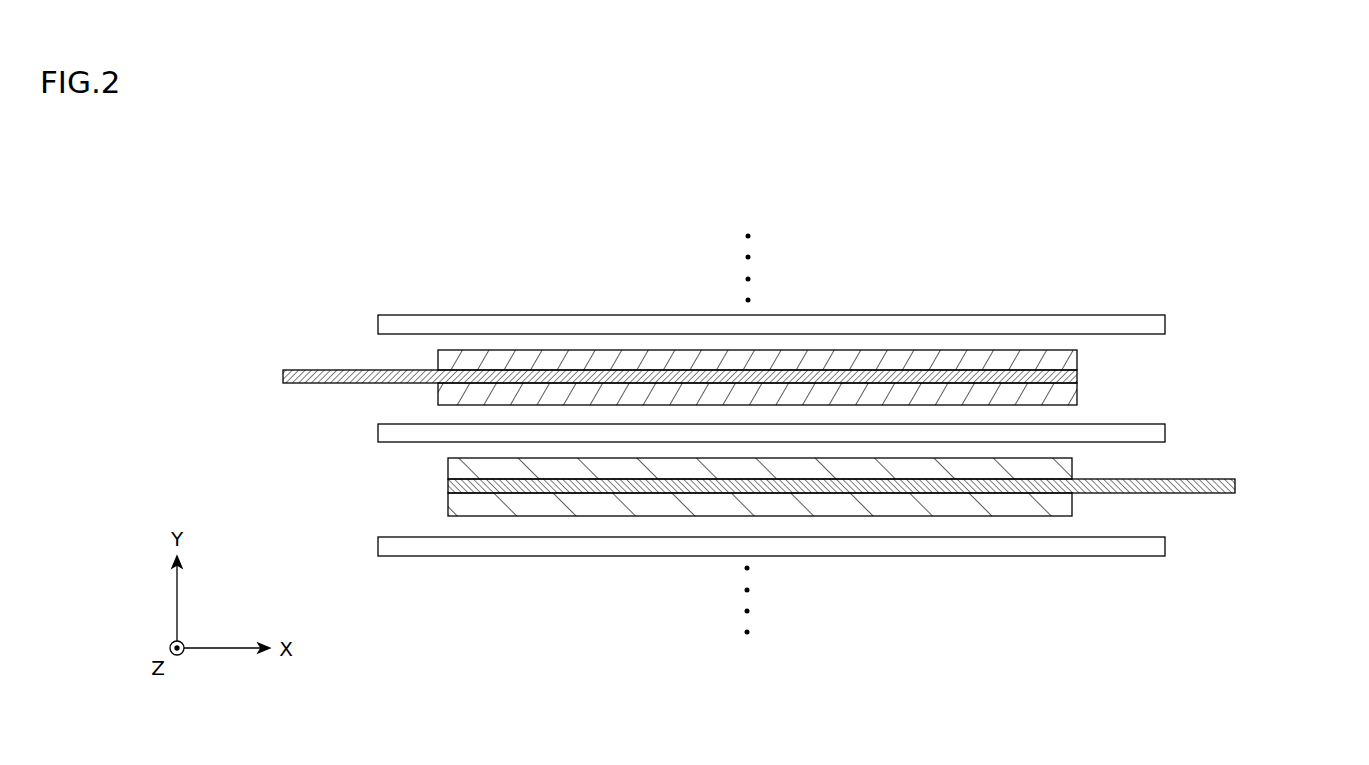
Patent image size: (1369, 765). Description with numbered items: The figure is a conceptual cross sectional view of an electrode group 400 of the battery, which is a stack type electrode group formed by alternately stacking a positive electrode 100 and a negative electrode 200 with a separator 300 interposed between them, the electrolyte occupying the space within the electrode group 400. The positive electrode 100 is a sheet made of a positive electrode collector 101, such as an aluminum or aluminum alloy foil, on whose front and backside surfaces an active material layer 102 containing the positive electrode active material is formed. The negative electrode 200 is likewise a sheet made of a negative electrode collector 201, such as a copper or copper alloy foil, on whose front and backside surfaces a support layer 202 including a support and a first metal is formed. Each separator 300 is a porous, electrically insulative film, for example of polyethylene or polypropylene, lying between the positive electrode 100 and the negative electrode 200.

The electrode group 400 is at (418, 226).
The separator 300 is at (378, 324).
The positive electrode 100 is at (823, 377).
The positive electrode collector 101 is at (1077, 377).
The active material layer 102 is at (1077, 360).
The negative electrode 200 is at (906, 489).
The negative electrode collector 201 is at (1235, 486).
The support layer 202 is at (1072, 468).